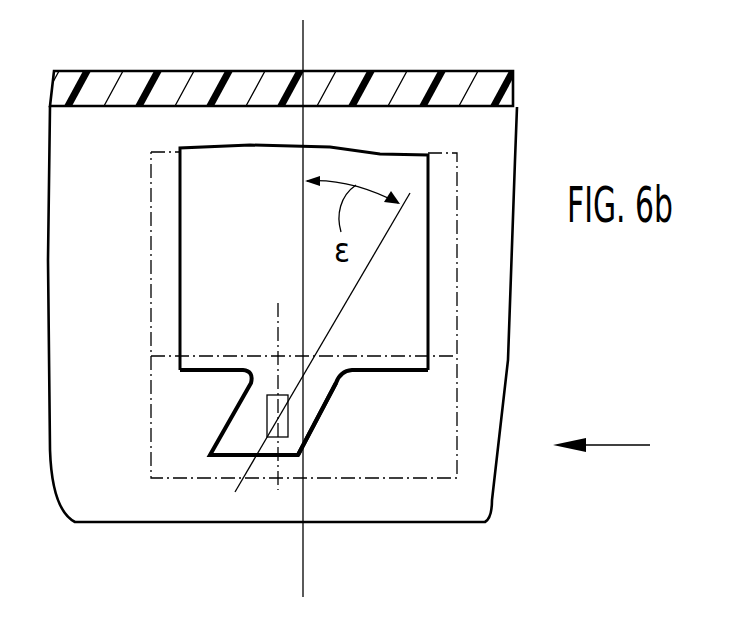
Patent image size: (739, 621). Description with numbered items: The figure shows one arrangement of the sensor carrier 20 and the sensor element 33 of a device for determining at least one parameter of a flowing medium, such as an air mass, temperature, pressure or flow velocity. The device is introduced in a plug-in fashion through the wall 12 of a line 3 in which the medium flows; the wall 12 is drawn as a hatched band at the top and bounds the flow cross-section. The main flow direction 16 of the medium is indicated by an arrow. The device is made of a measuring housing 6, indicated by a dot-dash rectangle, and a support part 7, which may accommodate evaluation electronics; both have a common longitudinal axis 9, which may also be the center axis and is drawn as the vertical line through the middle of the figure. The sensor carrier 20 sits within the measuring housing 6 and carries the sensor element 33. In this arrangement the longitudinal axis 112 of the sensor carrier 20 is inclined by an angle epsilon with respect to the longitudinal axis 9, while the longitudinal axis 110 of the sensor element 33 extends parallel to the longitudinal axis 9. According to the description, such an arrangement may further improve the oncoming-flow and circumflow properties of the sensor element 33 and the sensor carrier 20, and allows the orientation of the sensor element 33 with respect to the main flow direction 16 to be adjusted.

The line 3 is at (127, 188).
The measuring housing 6 is at (168, 417).
The support part 7 is at (164, 283).
The longitudinal axis 9 is at (303, 568).
The wall 12 is at (152, 77).
The main flow direction 16 is at (627, 445).
The sensor carrier 20 is at (318, 397).
The sensor element 33 is at (313, 423).
The longitudinal axis of sensor element 110 is at (278, 326).
The longitudinal axis of sensor carrier 112 is at (300, 291).